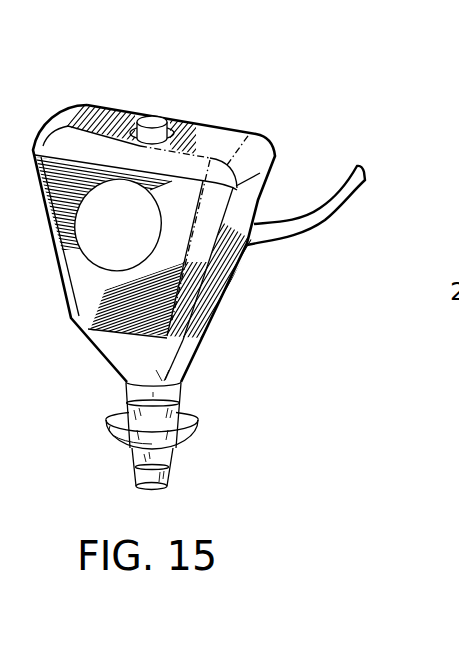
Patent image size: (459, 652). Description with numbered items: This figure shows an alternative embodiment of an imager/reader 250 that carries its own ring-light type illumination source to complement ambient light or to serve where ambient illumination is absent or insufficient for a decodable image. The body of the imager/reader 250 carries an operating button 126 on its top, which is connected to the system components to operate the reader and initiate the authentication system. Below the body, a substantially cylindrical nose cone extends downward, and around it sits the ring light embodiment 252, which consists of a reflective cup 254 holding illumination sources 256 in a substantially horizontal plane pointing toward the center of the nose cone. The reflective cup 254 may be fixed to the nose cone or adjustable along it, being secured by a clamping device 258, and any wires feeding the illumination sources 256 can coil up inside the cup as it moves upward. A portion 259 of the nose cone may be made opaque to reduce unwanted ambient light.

The operating button 126 is at (153, 118).
The imager/reader 250 is at (294, 139).
The ring light embodiment 252 is at (212, 415).
The reflective cup 254 is at (108, 433).
The illumination sources 256 is at (108, 418).
The clamping device 258 is at (175, 448).
The opaque portion of nose cone 259 is at (165, 481).